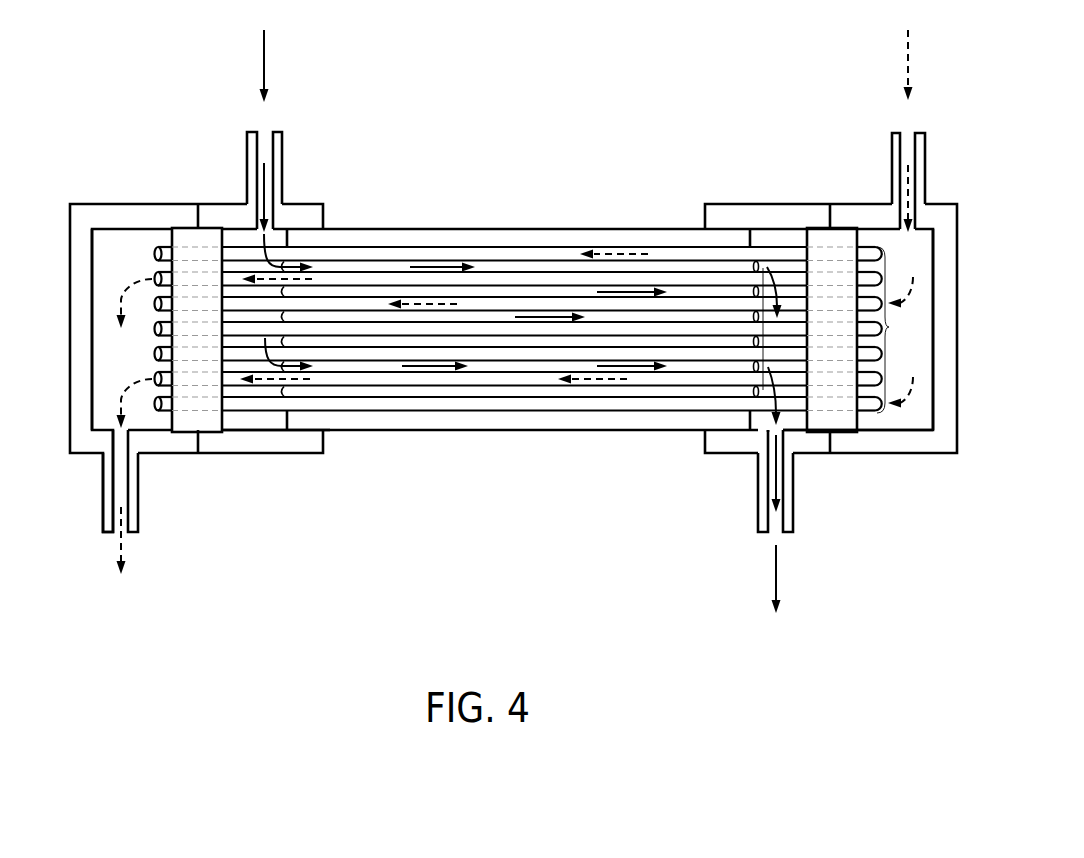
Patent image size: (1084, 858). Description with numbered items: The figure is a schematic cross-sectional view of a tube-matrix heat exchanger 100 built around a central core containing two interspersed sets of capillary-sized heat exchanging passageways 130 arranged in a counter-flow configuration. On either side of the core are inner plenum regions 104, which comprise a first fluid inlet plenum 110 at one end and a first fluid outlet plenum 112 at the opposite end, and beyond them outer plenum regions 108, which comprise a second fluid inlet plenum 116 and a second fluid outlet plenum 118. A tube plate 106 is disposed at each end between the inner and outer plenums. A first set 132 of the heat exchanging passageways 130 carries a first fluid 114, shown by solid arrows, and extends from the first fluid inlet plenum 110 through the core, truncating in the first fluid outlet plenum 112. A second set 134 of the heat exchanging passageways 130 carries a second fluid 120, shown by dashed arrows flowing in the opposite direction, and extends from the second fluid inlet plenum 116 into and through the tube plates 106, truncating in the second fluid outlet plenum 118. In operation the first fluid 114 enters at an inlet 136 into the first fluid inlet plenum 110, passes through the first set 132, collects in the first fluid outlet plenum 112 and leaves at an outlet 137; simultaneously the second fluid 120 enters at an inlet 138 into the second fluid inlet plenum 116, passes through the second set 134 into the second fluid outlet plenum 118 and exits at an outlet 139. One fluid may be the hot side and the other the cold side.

The heat exchanger 100 is at (135, 65).
The inner plenum regions 104 is at (513, 368).
The tube plate regions 106 is at (195, 247).
The outer plenum regions 108 is at (499, 270).
The first fluid inlet plenum 110 is at (267, 422).
The first fluid outlet plenum 112 is at (793, 420).
The first fluid 114 is at (262, 60).
The second fluid inlet plenum 116 is at (900, 253).
The second fluid outlet plenum 118 is at (118, 250).
The second fluid 120 is at (905, 62).
The heat exchanging passageways 130 is at (388, 257).
The first set of heat exchanging passageways 132 is at (763, 328).
The second set of heat exchanging passageways 134 is at (889, 327).
The inlet 136 is at (280, 157).
The outlet 137 is at (758, 488).
The inlet 138 is at (892, 153).
The outlet 139 is at (133, 515).